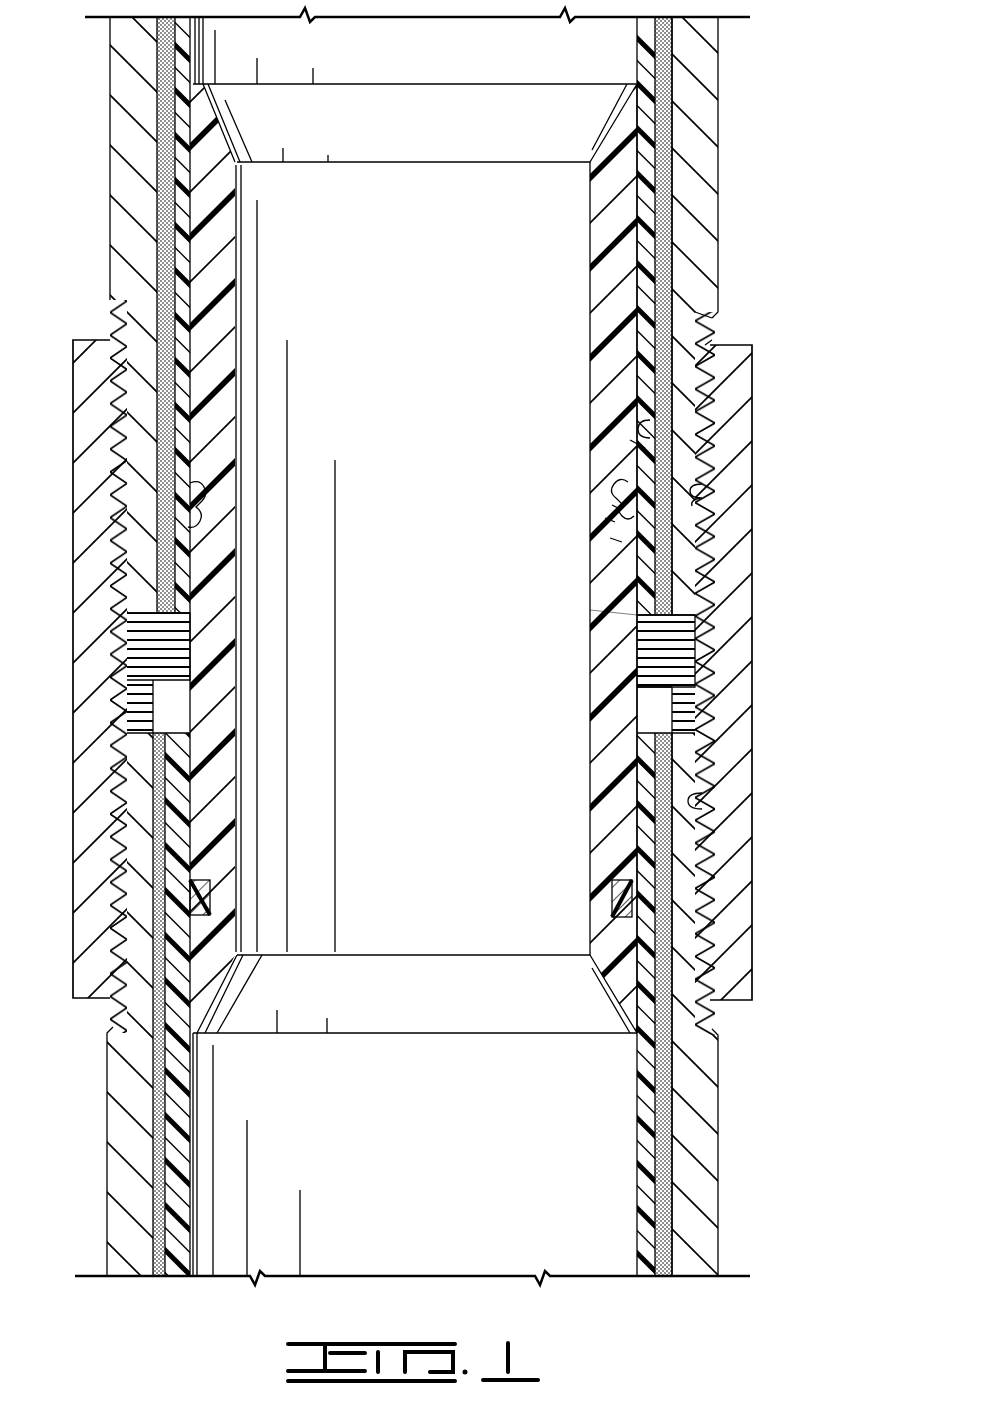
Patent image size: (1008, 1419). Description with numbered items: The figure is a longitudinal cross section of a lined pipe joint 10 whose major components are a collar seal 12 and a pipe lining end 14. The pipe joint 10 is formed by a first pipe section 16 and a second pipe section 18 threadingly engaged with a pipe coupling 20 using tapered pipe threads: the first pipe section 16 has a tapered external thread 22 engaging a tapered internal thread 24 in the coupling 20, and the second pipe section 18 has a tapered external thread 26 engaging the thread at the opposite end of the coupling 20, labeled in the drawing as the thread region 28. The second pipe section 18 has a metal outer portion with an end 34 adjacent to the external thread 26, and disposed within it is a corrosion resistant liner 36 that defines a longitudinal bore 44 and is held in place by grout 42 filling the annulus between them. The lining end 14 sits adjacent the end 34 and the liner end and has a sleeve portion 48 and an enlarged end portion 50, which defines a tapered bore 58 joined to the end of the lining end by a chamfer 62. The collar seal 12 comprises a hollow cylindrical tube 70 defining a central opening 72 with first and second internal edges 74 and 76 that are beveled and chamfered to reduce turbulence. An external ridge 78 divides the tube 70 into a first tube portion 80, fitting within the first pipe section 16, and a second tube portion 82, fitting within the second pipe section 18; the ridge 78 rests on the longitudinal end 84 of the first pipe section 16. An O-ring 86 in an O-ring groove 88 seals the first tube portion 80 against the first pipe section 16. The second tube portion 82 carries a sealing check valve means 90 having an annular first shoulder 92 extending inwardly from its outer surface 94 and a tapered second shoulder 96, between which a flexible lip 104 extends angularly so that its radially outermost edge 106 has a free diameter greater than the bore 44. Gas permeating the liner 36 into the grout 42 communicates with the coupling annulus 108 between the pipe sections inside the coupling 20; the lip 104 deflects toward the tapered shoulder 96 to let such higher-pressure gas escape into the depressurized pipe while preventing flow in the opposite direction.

The pipe joint 10 is at (785, 266).
The collar seal 12 is at (676, 400).
The pipe lining end 14 is at (690, 450).
The first pipe section 16 is at (733, 1102).
The second pipe section 18 is at (730, 98).
The pipe coupling 20 is at (738, 660).
The tapered external thread 22 is at (710, 840).
The tapered internal thread 24 is at (688, 797).
The tapered external thread 26 is at (708, 585).
The thread root 28 is at (712, 492).
The end of metal outer portion 34 is at (708, 625).
The liner 36 is at (645, 158).
The grout material 42 is at (663, 62).
The longitudinal bore of liner 44 is at (660, 175).
The sleeve portion 48 is at (660, 176).
The enlarged end portion 50 is at (650, 372).
The tapered bore 58 is at (640, 445).
The chamfer 62 is at (600, 620).
The cylindrical tube 70 is at (612, 267).
The central opening 72 is at (415, 424).
The first internal edge 74 is at (240, 992).
The second internal edge 76 is at (230, 140).
The external ridge 78 is at (653, 705).
The first tube portion 80 is at (415, 1115).
The second tube portion 82 is at (416, 89).
The longitudinal end of first pipe section 84 is at (665, 705).
The O-ring 86 is at (630, 905).
The O-ring groove 88 is at (620, 880).
The sealing check valve means 90 is at (605, 520).
The first shoulder 92 is at (610, 540).
The outer surface 94 is at (647, 430).
The tapered second shoulder 96 is at (625, 490).
The flexible lip 104 is at (612, 505).
The radially outermost edge 106 is at (683, 500).
The coupling annulus 108 is at (680, 672).